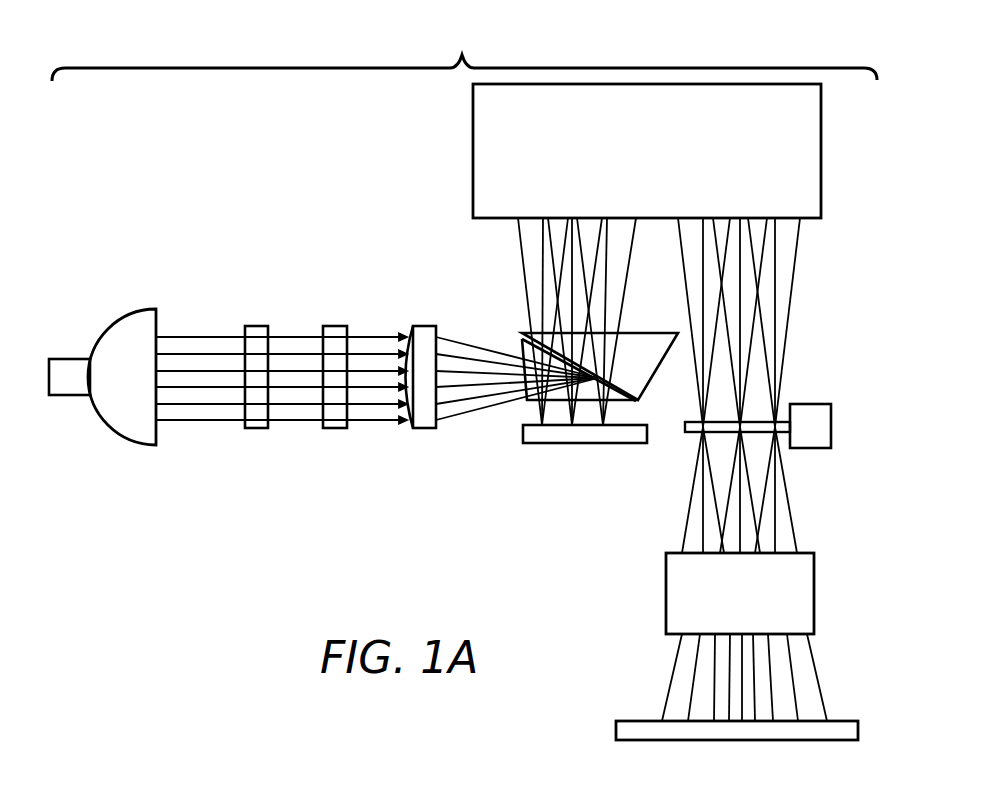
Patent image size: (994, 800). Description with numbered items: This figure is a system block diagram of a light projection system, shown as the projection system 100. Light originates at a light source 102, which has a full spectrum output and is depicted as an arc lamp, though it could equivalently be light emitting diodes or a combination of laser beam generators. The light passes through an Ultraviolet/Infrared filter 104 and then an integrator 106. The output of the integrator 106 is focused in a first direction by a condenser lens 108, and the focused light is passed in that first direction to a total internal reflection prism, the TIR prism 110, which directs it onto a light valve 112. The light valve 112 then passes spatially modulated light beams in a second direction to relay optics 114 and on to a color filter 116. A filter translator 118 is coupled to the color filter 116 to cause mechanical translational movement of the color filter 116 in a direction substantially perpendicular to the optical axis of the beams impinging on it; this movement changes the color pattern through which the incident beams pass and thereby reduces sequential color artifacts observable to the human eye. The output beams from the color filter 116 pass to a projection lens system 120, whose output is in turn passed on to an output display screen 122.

The projection system 100 is at (464, 54).
The light source 102 is at (128, 318).
The UV/IR filter 104 is at (258, 325).
The integrator 106 is at (334, 325).
The condenser lens 108 is at (426, 325).
The TIR prism 110 is at (534, 332).
The light valve 112 is at (532, 444).
The relay optics 114 is at (473, 158).
The color filter 116 is at (691, 433).
The filter translator 118 is at (815, 404).
The projection lens system 120 is at (666, 598).
The output display screen 122 is at (648, 721).